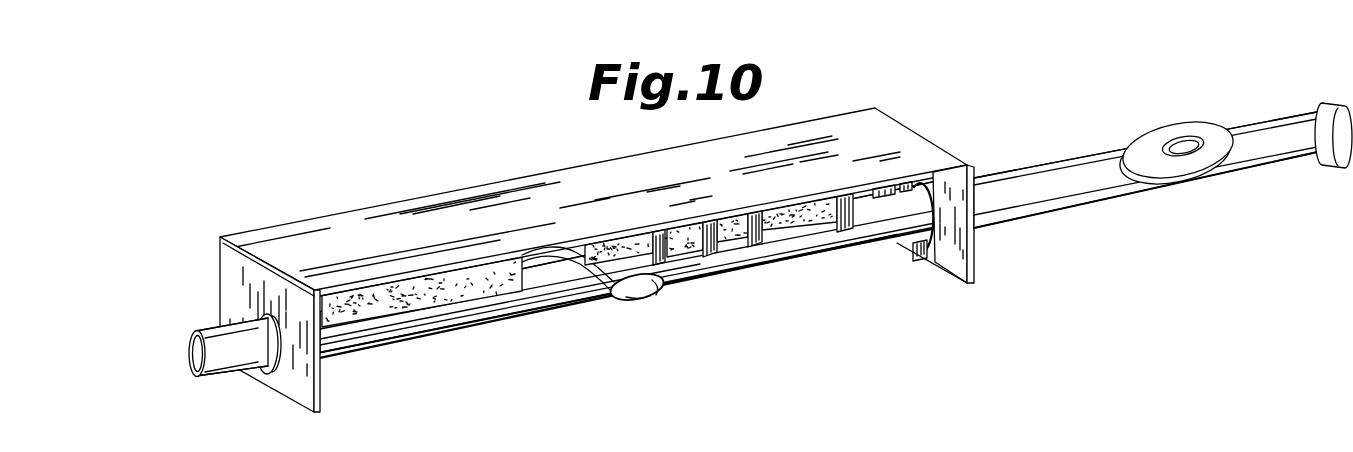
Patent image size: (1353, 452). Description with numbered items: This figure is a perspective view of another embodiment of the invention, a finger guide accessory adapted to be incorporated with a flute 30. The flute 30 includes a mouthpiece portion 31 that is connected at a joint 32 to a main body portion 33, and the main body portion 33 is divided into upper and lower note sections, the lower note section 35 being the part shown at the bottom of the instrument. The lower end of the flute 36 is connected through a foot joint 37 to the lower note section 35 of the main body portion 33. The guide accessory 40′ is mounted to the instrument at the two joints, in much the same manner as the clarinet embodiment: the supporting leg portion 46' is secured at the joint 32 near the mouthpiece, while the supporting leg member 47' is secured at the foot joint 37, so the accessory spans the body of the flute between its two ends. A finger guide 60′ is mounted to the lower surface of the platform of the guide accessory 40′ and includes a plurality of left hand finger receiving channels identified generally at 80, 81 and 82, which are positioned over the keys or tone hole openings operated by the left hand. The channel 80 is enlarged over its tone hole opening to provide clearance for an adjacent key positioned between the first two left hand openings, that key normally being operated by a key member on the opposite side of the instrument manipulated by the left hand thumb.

The flute 30 is at (1102, 216).
The mouthpiece portion 31 is at (1087, 158).
The joint 32 is at (922, 250).
The main body portion 33 is at (614, 305).
The lower note section 35 is at (471, 330).
The lower end of the flute 36 is at (220, 378).
The foot joint 37 is at (277, 393).
The guide accessory 40′ is at (403, 192).
The supporting leg portion 46' is at (931, 241).
The supporting leg member 47' is at (273, 342).
The finger guide 60′ is at (629, 245).
The left hand finger receiving channel 80 is at (808, 228).
The left hand finger receiving channel 81 is at (742, 242).
The left hand finger receiving channel 82 is at (688, 255).